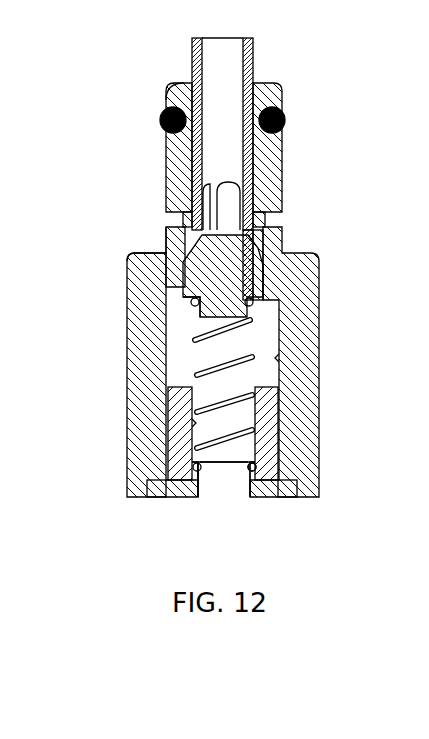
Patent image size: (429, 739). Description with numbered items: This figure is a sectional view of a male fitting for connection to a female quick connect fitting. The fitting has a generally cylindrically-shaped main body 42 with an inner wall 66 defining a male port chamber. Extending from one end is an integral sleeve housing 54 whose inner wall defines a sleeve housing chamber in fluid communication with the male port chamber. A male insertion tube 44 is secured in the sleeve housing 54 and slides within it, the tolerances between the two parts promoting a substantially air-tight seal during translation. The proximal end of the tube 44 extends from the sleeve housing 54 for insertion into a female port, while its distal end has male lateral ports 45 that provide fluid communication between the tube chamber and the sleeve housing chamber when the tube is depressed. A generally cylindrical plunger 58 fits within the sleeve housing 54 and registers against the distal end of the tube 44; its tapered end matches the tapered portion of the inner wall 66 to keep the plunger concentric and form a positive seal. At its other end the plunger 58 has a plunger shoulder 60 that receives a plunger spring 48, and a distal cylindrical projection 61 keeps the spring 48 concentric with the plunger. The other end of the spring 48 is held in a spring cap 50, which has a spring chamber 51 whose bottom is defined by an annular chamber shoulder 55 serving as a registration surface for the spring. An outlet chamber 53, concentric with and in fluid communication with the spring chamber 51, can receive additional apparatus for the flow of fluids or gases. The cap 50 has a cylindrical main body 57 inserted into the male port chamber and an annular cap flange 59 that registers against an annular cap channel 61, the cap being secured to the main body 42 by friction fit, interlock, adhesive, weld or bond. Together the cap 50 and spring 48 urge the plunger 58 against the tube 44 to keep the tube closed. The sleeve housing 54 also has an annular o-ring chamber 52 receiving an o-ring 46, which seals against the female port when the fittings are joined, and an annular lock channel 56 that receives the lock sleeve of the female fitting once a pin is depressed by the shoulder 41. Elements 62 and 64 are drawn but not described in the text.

The shoulder 41 is at (160, 253).
The main body 42 is at (282, 237).
The male insertion tube 44 is at (253, 63).
The male lateral ports 45 is at (228, 205).
The o-ring 46 is at (285, 118).
The plunger spring 48 is at (253, 318).
The spring cap 50 is at (275, 477).
The spring chamber 51 is at (228, 457).
The annular o-ring chamber 52 is at (170, 140).
The outlet chamber 53 is at (222, 492).
The sleeve housing 54 is at (170, 92).
The annular chamber shoulder 55 is at (258, 468).
The annular lock channel 56 is at (183, 223).
The cylindrical main body 57 is at (255, 463).
The plunger 58 is at (195, 262).
The annular cap flange 59 is at (153, 498).
The plunger shoulder 60 is at (268, 303).
The distal cylindrical projection 61 is at (200, 318).
The spring 62 is at (192, 427).
The passage 64 is at (193, 497).
The inner wall 66 is at (279, 358).